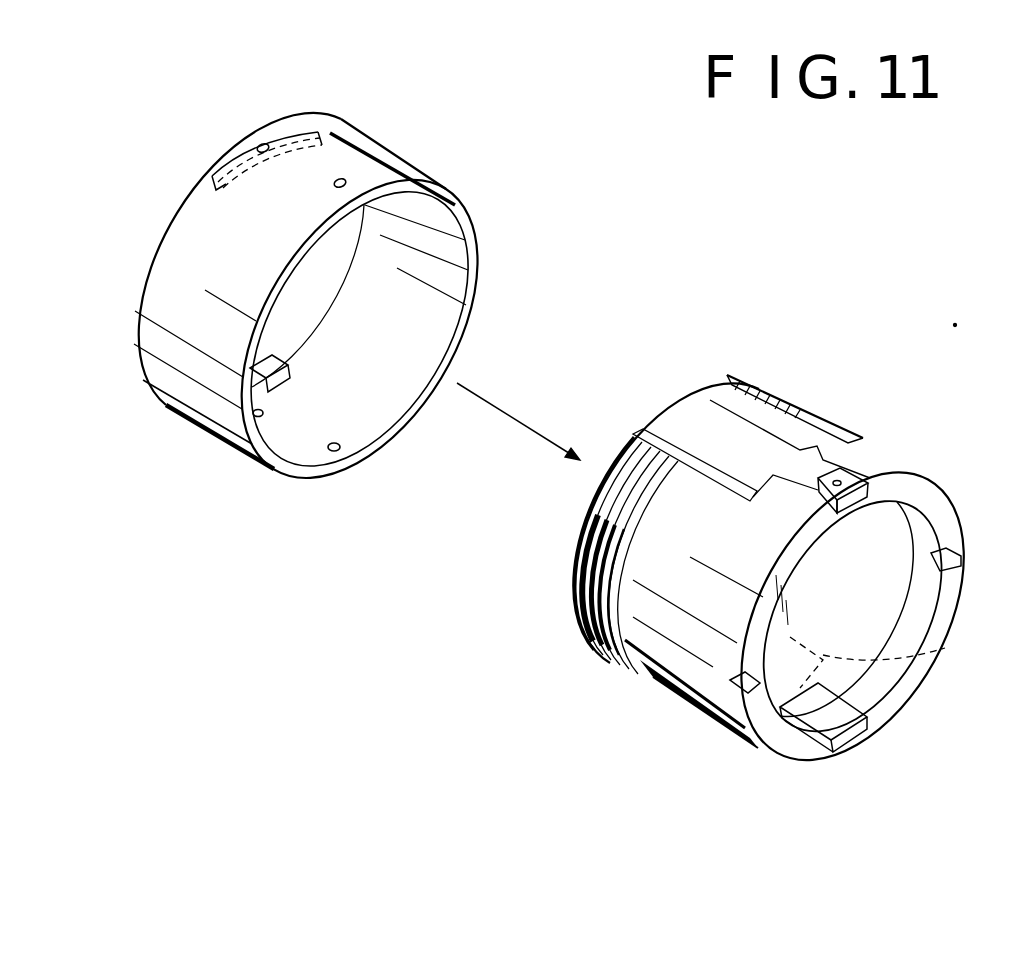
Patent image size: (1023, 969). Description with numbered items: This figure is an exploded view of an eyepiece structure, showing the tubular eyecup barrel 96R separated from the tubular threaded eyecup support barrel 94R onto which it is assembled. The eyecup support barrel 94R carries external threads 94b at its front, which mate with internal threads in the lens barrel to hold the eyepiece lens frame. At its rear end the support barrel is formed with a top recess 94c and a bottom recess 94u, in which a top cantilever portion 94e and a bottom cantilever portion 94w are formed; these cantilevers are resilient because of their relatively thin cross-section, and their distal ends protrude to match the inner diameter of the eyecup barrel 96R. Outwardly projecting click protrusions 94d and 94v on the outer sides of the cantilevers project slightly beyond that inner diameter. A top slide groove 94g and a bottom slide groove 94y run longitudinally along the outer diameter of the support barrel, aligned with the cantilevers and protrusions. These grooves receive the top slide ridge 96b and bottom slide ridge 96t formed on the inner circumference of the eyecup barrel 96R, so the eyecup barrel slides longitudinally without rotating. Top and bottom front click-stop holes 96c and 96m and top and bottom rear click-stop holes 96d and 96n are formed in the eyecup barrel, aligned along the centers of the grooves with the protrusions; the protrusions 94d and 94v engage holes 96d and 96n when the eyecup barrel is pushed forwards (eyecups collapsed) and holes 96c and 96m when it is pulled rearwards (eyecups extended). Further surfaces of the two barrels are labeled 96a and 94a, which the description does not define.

The outer lens barrel ring body 96a is at (142, 362).
The top slide ridge 96b is at (212, 165).
The top front click-stop hole 96c is at (258, 146).
The top rear click-stop hole 96d is at (346, 181).
The eyecup barrel 96R is at (196, 397).
The bottom slide ridge 96t is at (290, 378).
The bottom front click-stop hole 96m is at (263, 413).
The bottom rear click-stop hole 96n is at (340, 447).
The inner ring body 94a is at (672, 693).
The external threads 94b is at (582, 608).
The top slide groove 94g is at (795, 430).
The top click protrusion 94d is at (843, 482).
The top cantilever portion 94e is at (848, 502).
The top recess 94c is at (836, 513).
The bottom slide groove 94y is at (945, 648).
The eyecup support barrel 94R is at (705, 690).
The bottom recess 94u is at (870, 725).
The bottom cantilever portion 94w is at (863, 752).
The bottom click protrusion 94v is at (830, 762).